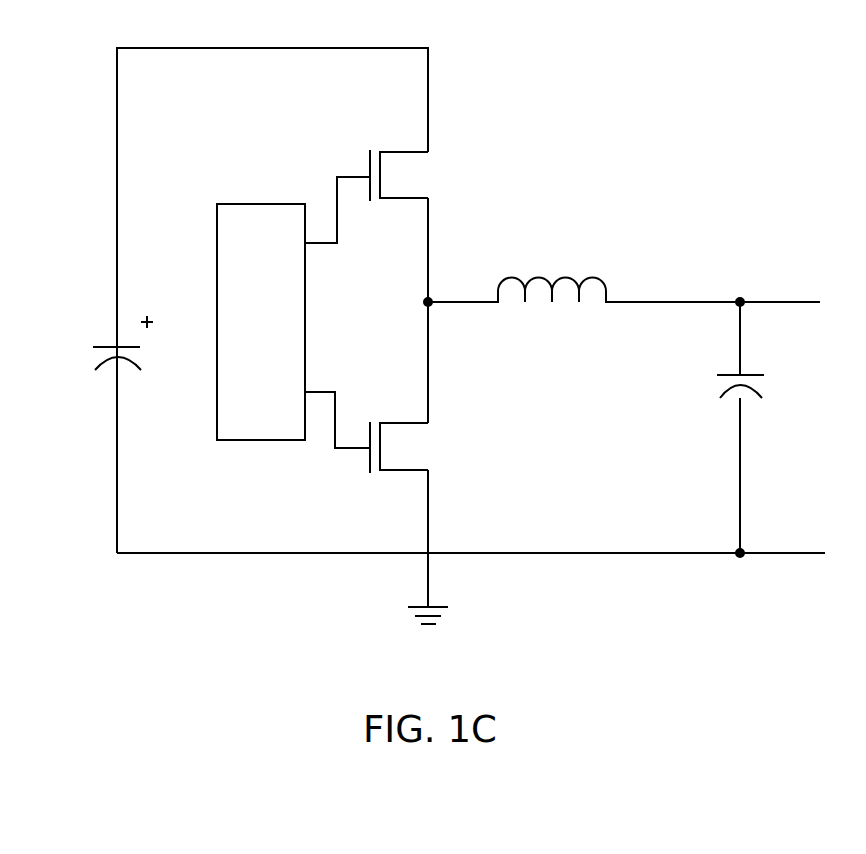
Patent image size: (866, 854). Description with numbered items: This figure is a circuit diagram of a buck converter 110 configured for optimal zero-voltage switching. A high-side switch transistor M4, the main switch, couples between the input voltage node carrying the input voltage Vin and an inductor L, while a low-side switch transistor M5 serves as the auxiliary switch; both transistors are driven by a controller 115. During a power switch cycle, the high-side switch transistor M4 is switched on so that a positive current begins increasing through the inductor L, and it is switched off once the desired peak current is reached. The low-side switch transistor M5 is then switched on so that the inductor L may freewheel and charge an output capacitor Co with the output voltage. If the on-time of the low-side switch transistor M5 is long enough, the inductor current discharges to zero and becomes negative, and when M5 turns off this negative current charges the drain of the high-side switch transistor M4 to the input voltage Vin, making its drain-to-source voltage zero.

The buck converter 110 is at (568, 25).
The controller 115 is at (261, 204).
The high-side switch transistor M4 is at (385, 196).
The low-side switch transistor M5 is at (389, 432).
The inductor L is at (624, 314).
The output capacitor Co is at (756, 427).
The input voltage Vin is at (100, 343).